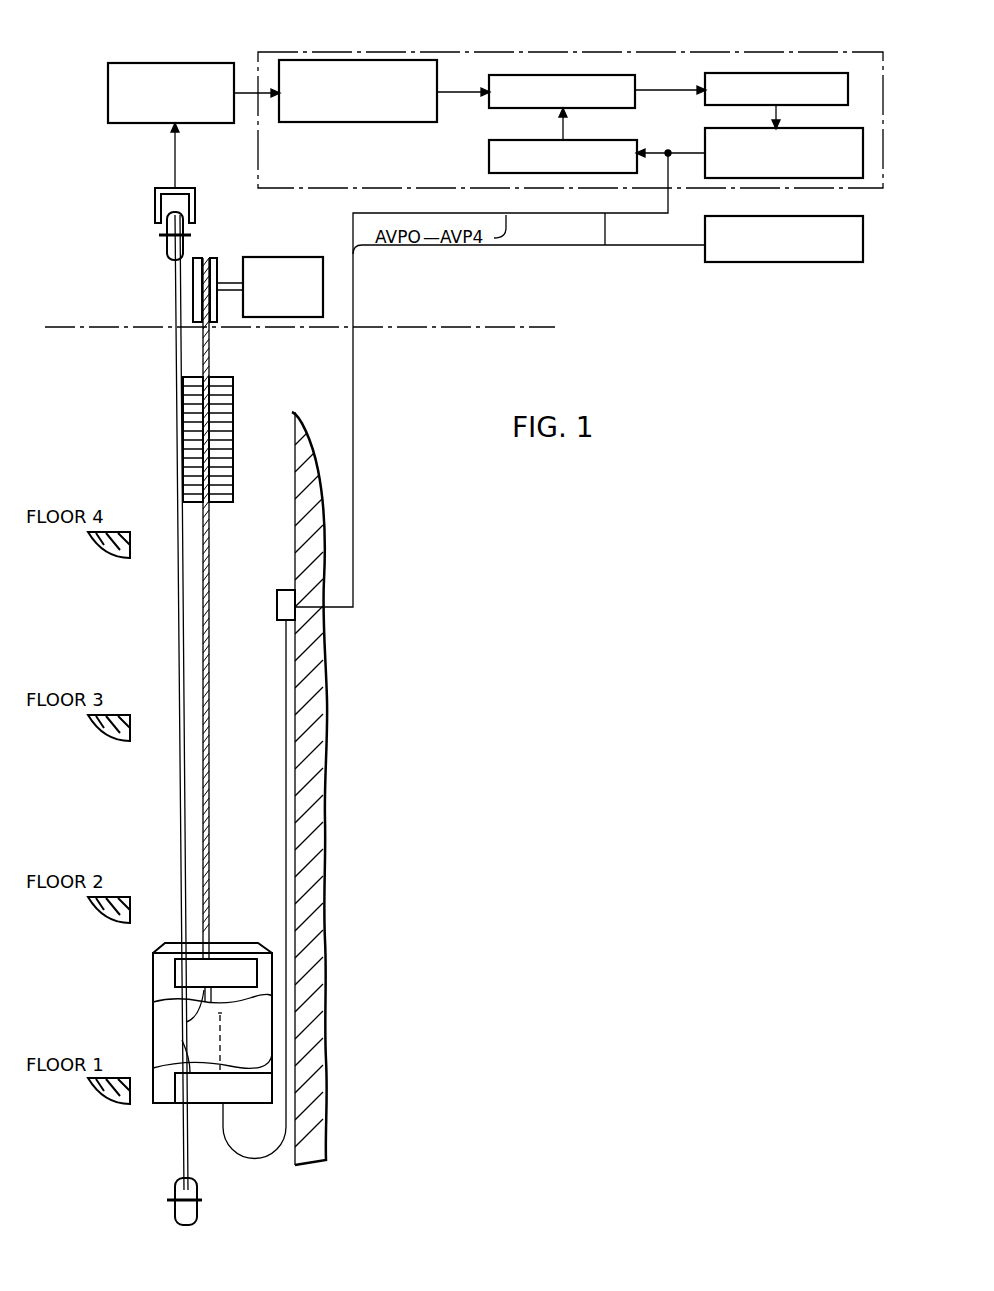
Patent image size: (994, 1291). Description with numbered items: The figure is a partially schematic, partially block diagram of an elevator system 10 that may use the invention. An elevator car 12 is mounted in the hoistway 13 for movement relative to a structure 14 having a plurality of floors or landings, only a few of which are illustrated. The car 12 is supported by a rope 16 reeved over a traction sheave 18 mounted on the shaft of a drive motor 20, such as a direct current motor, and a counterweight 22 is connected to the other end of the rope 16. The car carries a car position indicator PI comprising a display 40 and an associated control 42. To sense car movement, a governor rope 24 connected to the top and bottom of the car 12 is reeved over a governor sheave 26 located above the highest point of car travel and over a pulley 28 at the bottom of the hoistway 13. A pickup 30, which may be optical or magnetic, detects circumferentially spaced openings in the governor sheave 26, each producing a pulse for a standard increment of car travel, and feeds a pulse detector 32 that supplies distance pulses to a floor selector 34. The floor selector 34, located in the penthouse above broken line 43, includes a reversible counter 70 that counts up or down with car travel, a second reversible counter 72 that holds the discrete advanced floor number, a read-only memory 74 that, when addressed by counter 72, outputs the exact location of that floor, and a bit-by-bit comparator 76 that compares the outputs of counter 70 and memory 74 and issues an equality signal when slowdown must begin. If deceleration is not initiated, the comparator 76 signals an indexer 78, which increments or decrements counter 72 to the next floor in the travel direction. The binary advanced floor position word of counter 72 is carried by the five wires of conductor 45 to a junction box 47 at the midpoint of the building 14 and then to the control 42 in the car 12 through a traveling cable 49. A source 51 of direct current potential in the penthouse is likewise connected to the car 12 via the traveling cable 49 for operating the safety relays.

The elevator system 10 is at (362, 736).
The elevator car 12 is at (153, 1006).
The hoistway 13 is at (258, 401).
The structure 14 is at (298, 416).
The rope 16 is at (212, 800).
The traction sheave 18 is at (216, 258).
The drive motor 20 is at (262, 257).
The counterweight 22 is at (227, 376).
The governor rope 24 is at (172, 364).
The governor sheave 26 is at (164, 255).
The pulley 28 is at (178, 1190).
The pickup 30 is at (157, 195).
The pulse detector 32 is at (108, 70).
The floor selector 34 is at (874, 52).
The display 40 is at (175, 971).
The control 42 is at (175, 1100).
The broken line 43 is at (112, 327).
The conductor 45 is at (606, 246).
The junction box 47 is at (280, 590).
The traveling cable 49 is at (282, 718).
The source of direct current potential 51 is at (705, 262).
The reversible counter 70 is at (320, 60).
The second reversible counter 72 is at (705, 138).
The read-only memory 74 is at (489, 151).
The bit-by-bit comparator 76 is at (512, 74).
The indexer 78 is at (753, 72).